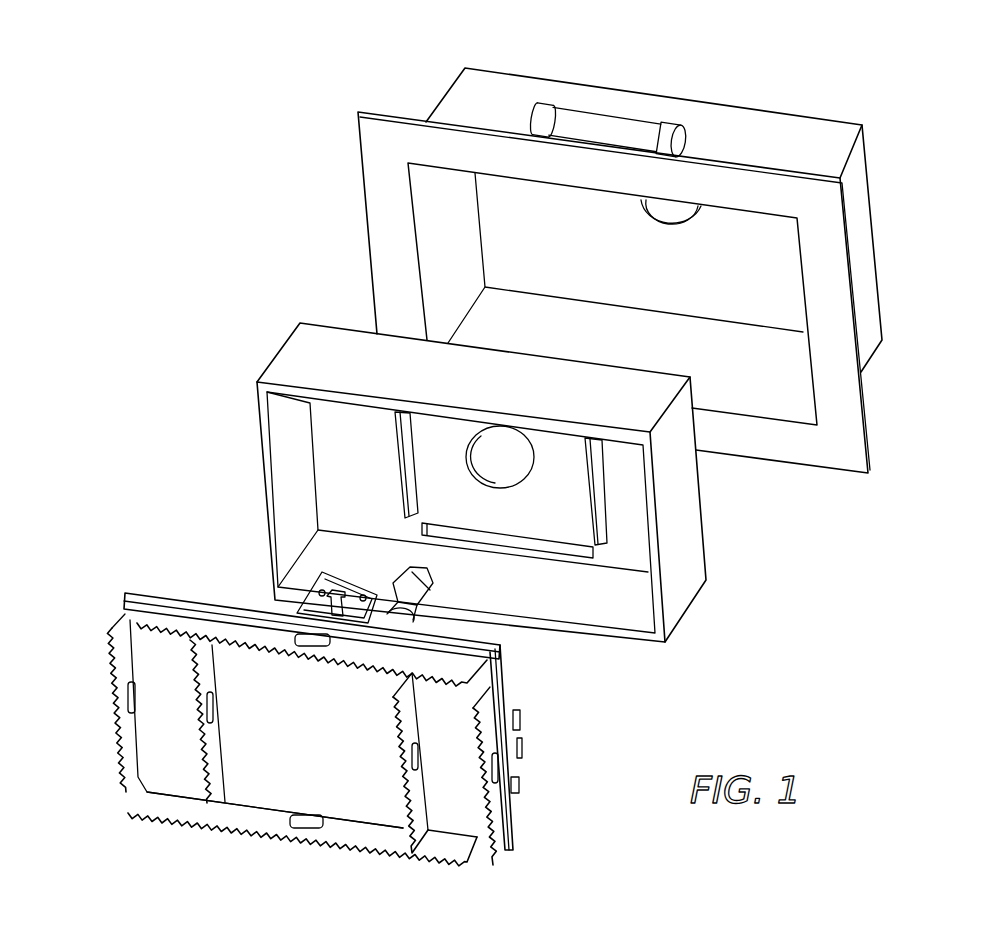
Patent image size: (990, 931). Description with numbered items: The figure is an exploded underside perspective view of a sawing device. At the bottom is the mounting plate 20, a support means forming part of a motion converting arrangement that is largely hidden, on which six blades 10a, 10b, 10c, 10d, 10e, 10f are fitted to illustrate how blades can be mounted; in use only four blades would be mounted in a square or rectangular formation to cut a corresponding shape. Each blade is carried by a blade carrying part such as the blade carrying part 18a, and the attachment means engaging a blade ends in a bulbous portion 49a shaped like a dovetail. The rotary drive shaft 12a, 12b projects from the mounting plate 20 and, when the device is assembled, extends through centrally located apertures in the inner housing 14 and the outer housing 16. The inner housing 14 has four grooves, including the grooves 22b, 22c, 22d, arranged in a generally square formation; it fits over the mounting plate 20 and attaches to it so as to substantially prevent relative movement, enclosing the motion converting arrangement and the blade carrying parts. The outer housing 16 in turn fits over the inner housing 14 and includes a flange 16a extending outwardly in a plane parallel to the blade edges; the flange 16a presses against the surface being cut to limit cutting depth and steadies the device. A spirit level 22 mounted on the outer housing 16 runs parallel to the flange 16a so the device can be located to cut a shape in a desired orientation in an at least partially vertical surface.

The outer housing 16 is at (885, 432).
The flange 16a is at (824, 462).
The spirit level 22 is at (613, 118).
The inner housing 14 is at (683, 610).
The groove 22b is at (405, 463).
The groove 22c is at (528, 548).
The groove 22d is at (593, 512).
The mounting plate 20 is at (326, 742).
The blade 10a is at (172, 612).
The blade 10b is at (178, 806).
The blade 10c is at (120, 760).
The blade 10d is at (500, 813).
The blade 10e is at (215, 753).
The blade 10f is at (400, 718).
The bulbous portion 49a is at (305, 815).
The blade carrying part 18a is at (283, 597).
The rotary drive shaft 12a is at (402, 575).
The rotary drive shaft 12b is at (423, 607).